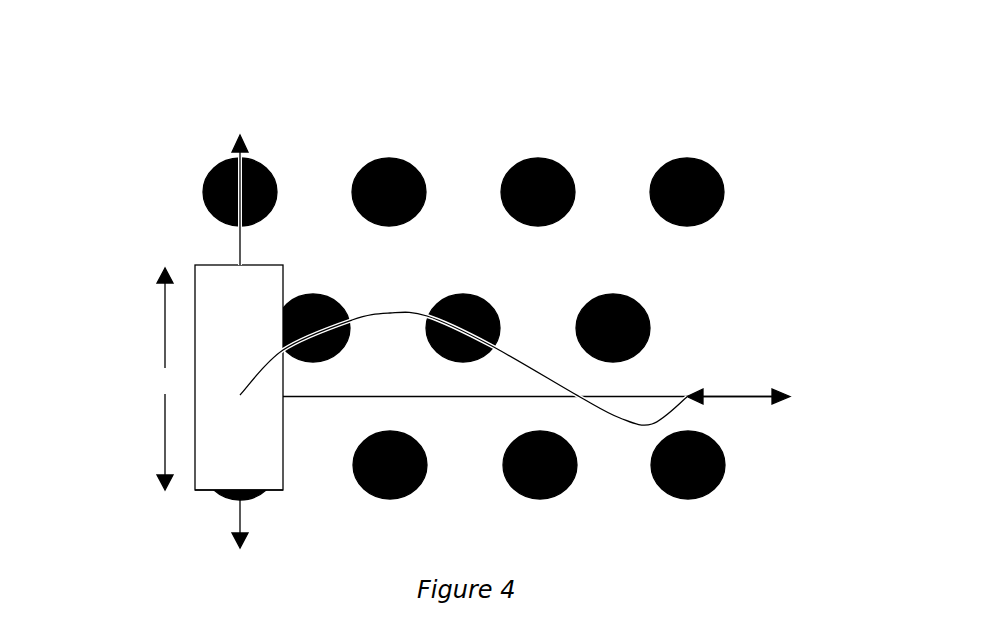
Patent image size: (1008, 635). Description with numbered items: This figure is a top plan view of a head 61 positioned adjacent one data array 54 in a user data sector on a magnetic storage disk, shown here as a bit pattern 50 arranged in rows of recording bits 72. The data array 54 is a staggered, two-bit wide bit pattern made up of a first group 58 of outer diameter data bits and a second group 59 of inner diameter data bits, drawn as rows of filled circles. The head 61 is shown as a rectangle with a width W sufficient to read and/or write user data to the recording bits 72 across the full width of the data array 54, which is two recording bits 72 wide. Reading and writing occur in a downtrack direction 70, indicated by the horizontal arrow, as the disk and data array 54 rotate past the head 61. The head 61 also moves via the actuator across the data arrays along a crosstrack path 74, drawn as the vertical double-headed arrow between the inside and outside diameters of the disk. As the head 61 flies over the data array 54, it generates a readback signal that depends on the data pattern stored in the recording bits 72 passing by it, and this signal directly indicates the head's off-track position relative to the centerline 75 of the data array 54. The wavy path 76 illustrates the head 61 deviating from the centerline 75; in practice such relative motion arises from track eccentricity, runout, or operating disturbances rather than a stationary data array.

The printed dot pattern 50 is at (608, 128).
The data array 54 is at (118, 394).
The first group of data bits 58 is at (685, 327).
The second group of data bits 59 is at (758, 465).
The head 61 is at (195, 490).
The downtrack direction 70 is at (745, 396).
The recording bits 72 is at (388, 158).
The crosstrack path 74 is at (240, 243).
The centerline 75 is at (310, 397).
The path 76 is at (593, 403).